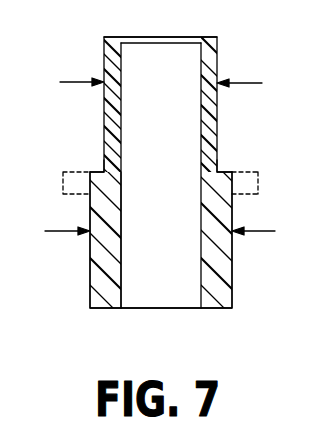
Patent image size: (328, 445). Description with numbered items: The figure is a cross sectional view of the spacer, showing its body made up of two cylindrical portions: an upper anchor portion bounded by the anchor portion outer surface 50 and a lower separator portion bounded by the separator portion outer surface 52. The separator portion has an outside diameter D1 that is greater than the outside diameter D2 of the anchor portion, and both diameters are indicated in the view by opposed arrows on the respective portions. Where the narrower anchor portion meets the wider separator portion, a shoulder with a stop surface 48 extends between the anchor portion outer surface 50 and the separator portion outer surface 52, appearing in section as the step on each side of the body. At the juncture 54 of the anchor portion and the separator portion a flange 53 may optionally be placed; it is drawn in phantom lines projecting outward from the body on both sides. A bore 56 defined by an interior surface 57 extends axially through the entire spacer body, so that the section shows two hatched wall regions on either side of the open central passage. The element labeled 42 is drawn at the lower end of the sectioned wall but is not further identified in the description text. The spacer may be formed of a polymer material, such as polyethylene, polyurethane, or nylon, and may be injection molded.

The tubular connector body 42 is at (230, 289).
The stop surface 48 is at (103, 170).
The anchor portion outer surface 50 is at (104, 70).
The separator portion outer surface 52 is at (90, 250).
The flange 53 is at (63, 177).
The juncture 54 is at (218, 168).
The bore 56 is at (163, 293).
The interior surface 57 is at (120, 288).
The outside diameter of the separator portion D1 is at (257, 235).
The outside diameter of the anchor portion D2 is at (243, 82).